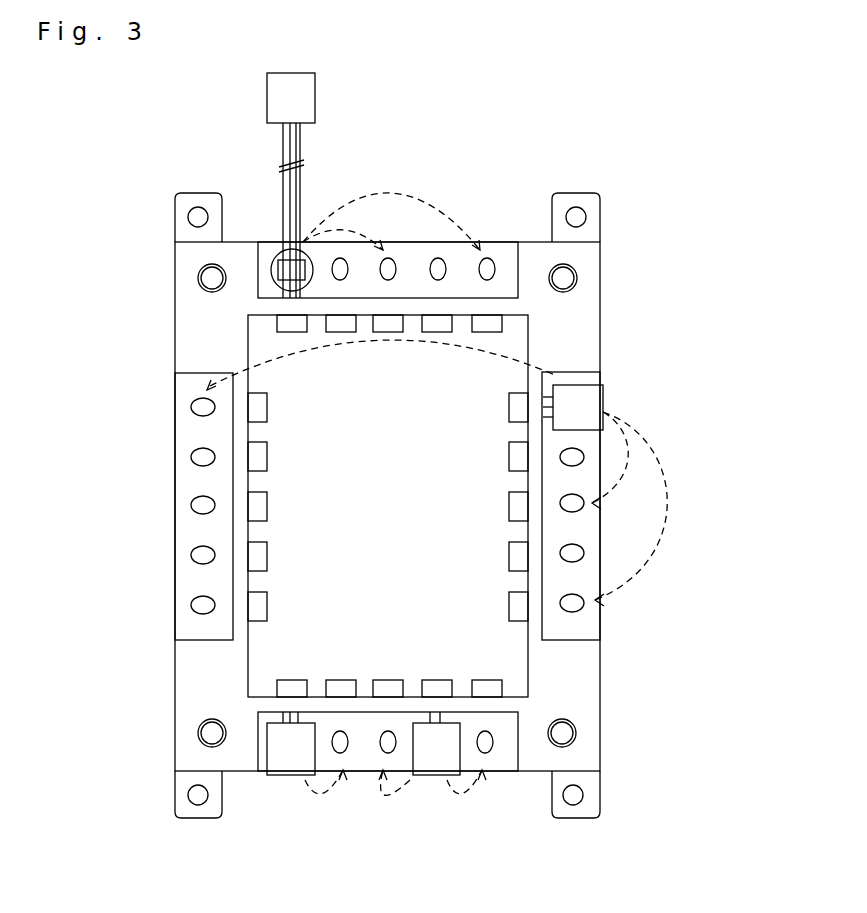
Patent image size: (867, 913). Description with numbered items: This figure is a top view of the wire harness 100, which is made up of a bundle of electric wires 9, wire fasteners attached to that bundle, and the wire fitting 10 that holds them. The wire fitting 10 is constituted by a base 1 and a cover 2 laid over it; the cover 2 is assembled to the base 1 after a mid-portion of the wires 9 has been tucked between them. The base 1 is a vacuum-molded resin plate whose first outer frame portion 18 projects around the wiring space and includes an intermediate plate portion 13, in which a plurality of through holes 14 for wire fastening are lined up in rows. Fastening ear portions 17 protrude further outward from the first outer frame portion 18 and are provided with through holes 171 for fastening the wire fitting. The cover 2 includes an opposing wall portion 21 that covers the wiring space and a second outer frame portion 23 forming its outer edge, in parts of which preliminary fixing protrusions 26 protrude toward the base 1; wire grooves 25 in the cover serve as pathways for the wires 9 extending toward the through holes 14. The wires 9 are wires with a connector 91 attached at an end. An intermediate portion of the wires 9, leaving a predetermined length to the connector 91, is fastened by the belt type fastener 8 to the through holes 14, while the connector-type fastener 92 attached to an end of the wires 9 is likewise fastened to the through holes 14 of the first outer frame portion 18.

The wire harness 100 is at (650, 118).
The wire fitting 10 is at (120, 657).
The base 1 is at (174, 614).
The cover 2 is at (174, 675).
The second outer frame portion 23 is at (575, 686).
The fastening ear portions 17 is at (576, 819).
The through holes for fastening the wire fitting 171 is at (583, 798).
The preliminary fixing protrusions 26 is at (207, 278).
The opposing wall portion 21 is at (443, 420).
The wire grooves 25 is at (267, 410).
The intermediate plate portion 13 is at (585, 623).
The first outer frame portion 18 is at (571, 506).
The through holes for wire fastening 14 is at (584, 507).
The connector-type fastener 92 is at (605, 392).
The connector 91 is at (315, 105).
The electric wires 9 is at (300, 151).
The belt type fastener 8 is at (273, 247).